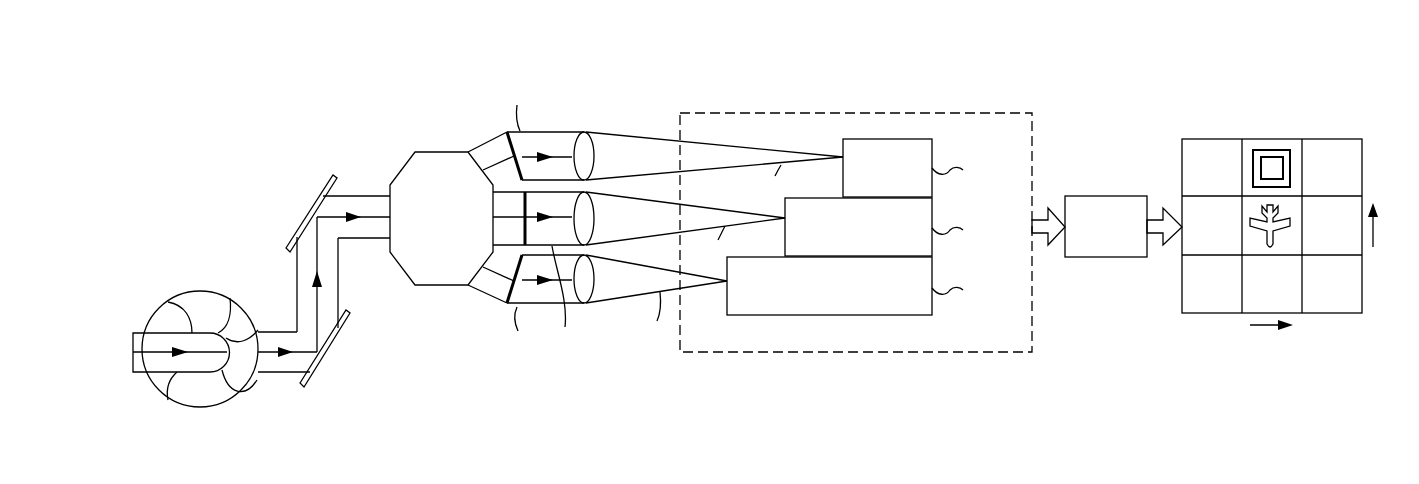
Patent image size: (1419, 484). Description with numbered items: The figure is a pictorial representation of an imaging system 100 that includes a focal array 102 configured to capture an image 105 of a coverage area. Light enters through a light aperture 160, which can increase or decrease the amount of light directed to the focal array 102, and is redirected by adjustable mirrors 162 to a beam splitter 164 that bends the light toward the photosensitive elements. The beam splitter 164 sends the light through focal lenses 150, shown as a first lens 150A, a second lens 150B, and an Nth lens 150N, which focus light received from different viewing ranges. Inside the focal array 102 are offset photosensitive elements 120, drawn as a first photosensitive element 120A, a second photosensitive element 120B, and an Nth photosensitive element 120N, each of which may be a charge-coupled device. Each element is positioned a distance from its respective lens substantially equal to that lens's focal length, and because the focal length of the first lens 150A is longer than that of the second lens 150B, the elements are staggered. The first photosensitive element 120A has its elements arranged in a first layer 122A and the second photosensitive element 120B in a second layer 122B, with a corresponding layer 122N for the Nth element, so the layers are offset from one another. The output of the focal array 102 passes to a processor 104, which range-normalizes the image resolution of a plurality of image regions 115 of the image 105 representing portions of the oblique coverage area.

The imaging system 100 is at (1006, 61).
The focal array 102 is at (784, 105).
The processor 104 is at (1088, 240).
The image 105 is at (1272, 192).
The image regions 115 is at (1352, 177).
The photosensitive elements 120 is at (829, 192).
The first photosensitive element 120A is at (915, 184).
The second photosensitive element 120B is at (888, 240).
The Nth photosensitive element 120N is at (804, 299).
The first layer 122A is at (976, 173).
The second layer 122B is at (976, 233).
The Nth detector output 122N is at (976, 293).
The focal lenses 150 is at (605, 209).
The first lens 150A is at (578, 132).
The second lens 150B is at (592, 190).
The Nth lens 150N is at (582, 305).
The light aperture 160 is at (213, 406).
The adjustable mirrors 162 is at (310, 214).
The beam splitter 164 is at (424, 234).